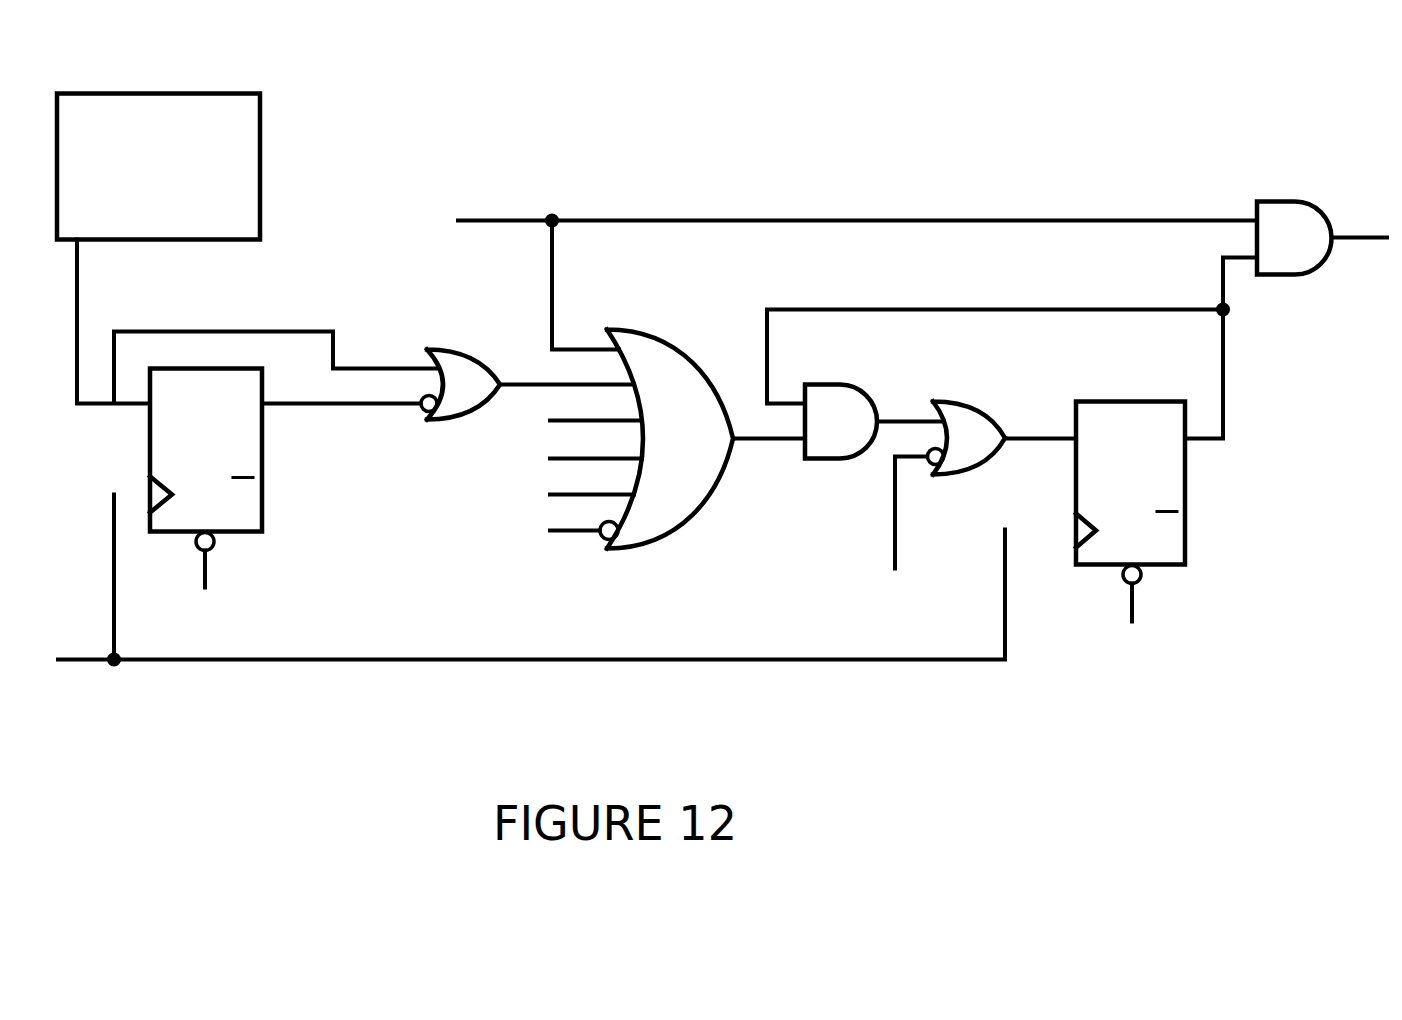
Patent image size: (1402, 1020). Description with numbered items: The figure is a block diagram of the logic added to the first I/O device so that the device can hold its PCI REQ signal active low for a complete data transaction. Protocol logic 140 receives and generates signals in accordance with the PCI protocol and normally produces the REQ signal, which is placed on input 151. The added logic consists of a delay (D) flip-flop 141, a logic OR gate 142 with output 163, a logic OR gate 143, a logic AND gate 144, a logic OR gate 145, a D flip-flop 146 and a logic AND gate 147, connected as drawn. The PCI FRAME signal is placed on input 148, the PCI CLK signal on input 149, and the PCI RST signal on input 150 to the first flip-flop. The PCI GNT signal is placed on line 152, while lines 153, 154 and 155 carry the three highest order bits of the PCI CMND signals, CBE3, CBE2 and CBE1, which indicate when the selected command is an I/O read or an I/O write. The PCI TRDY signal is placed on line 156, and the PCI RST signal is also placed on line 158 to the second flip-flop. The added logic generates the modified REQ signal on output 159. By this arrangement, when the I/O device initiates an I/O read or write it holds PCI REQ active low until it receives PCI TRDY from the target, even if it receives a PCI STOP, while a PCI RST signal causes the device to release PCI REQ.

The protocol logic 140 is at (245, 239).
The delay (D) flip-flop 141 is at (250, 531).
The logic OR gate 142 is at (429, 419).
The logic OR gate 143 is at (625, 549).
The logic AND gate 144 is at (843, 458).
The logic OR gate 145 is at (970, 474).
The D flip-flop 146 is at (1081, 565).
The logic AND gate 147 is at (1278, 274).
The input 148 is at (97, 403).
The input 149 is at (80, 660).
The input 150 is at (204, 586).
The input 151 is at (480, 221).
The line 152 is at (557, 421).
The line 153 is at (557, 459).
The line 154 is at (557, 495).
The line 155 is at (557, 531).
The line 156 is at (889, 556).
The line 158 is at (1128, 617).
The output 159 is at (1350, 238).
The output 163 is at (577, 387).